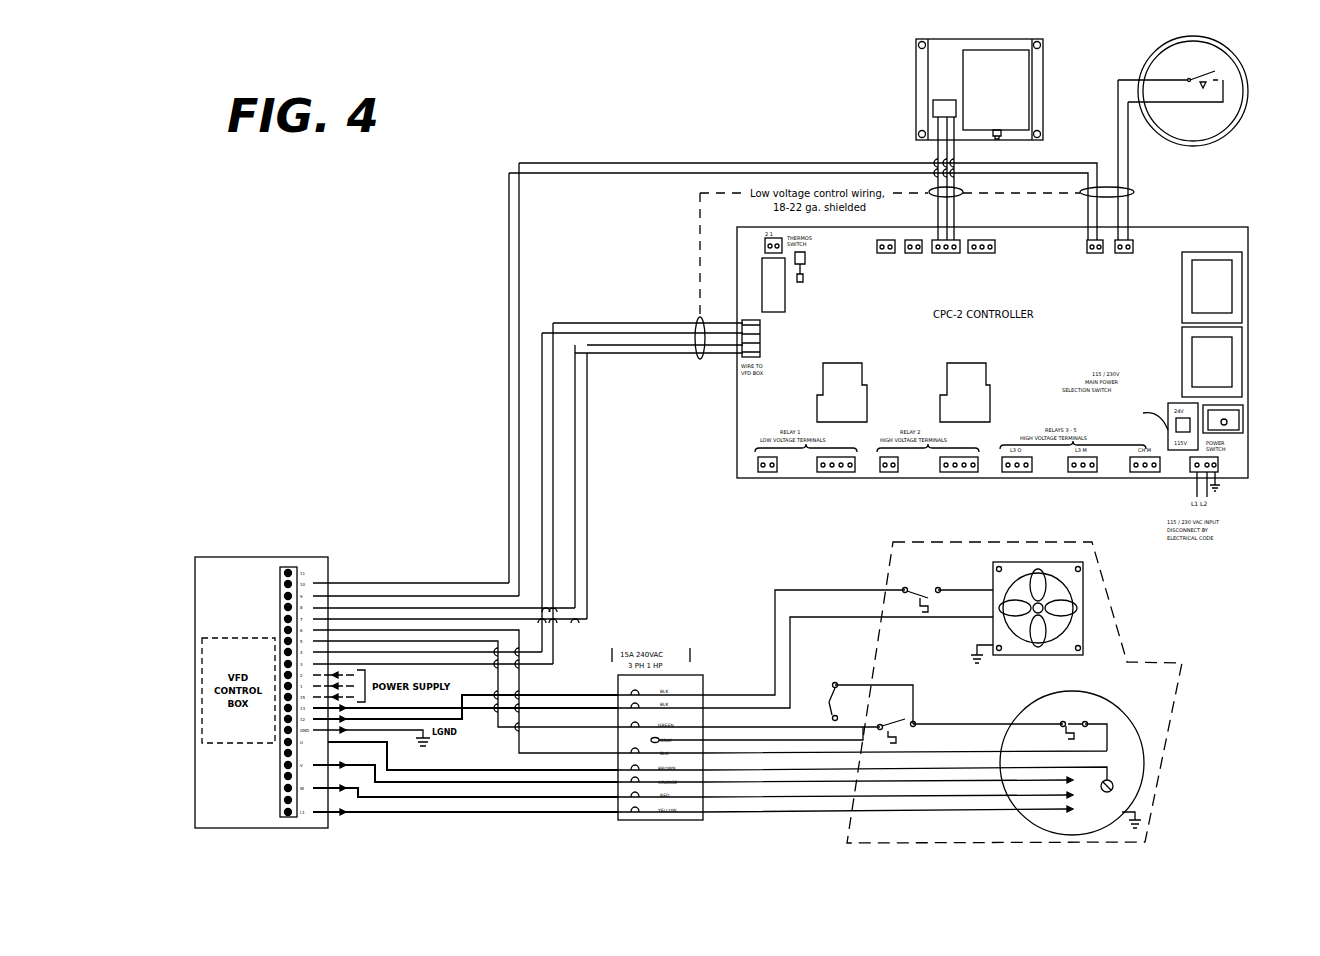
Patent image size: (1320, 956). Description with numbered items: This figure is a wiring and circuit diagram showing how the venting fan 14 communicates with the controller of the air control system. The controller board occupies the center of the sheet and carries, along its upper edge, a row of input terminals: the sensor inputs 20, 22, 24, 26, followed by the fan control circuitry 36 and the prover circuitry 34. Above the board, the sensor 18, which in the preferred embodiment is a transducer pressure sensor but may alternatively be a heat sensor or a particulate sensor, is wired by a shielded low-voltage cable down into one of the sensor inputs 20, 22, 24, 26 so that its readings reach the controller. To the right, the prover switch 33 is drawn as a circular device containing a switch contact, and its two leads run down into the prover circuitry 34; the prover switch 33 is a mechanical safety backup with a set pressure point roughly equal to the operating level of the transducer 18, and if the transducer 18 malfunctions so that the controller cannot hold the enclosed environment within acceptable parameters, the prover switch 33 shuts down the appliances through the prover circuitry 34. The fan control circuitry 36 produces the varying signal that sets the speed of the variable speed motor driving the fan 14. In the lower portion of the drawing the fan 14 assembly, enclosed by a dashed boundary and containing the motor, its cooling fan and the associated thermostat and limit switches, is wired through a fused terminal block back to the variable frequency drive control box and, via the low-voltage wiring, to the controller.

The fan 14 is at (1172, 717).
The sensor 18 is at (915, 78).
The sensor input 20 is at (885, 253).
The sensor input 22 is at (913, 253).
The sensor input 24 is at (948, 253).
The sensor input 26 is at (987, 253).
The prover switch 33 is at (1245, 65).
The prover circuitry 34 is at (1133, 243).
The fan control circuitry 36 is at (1094, 253).